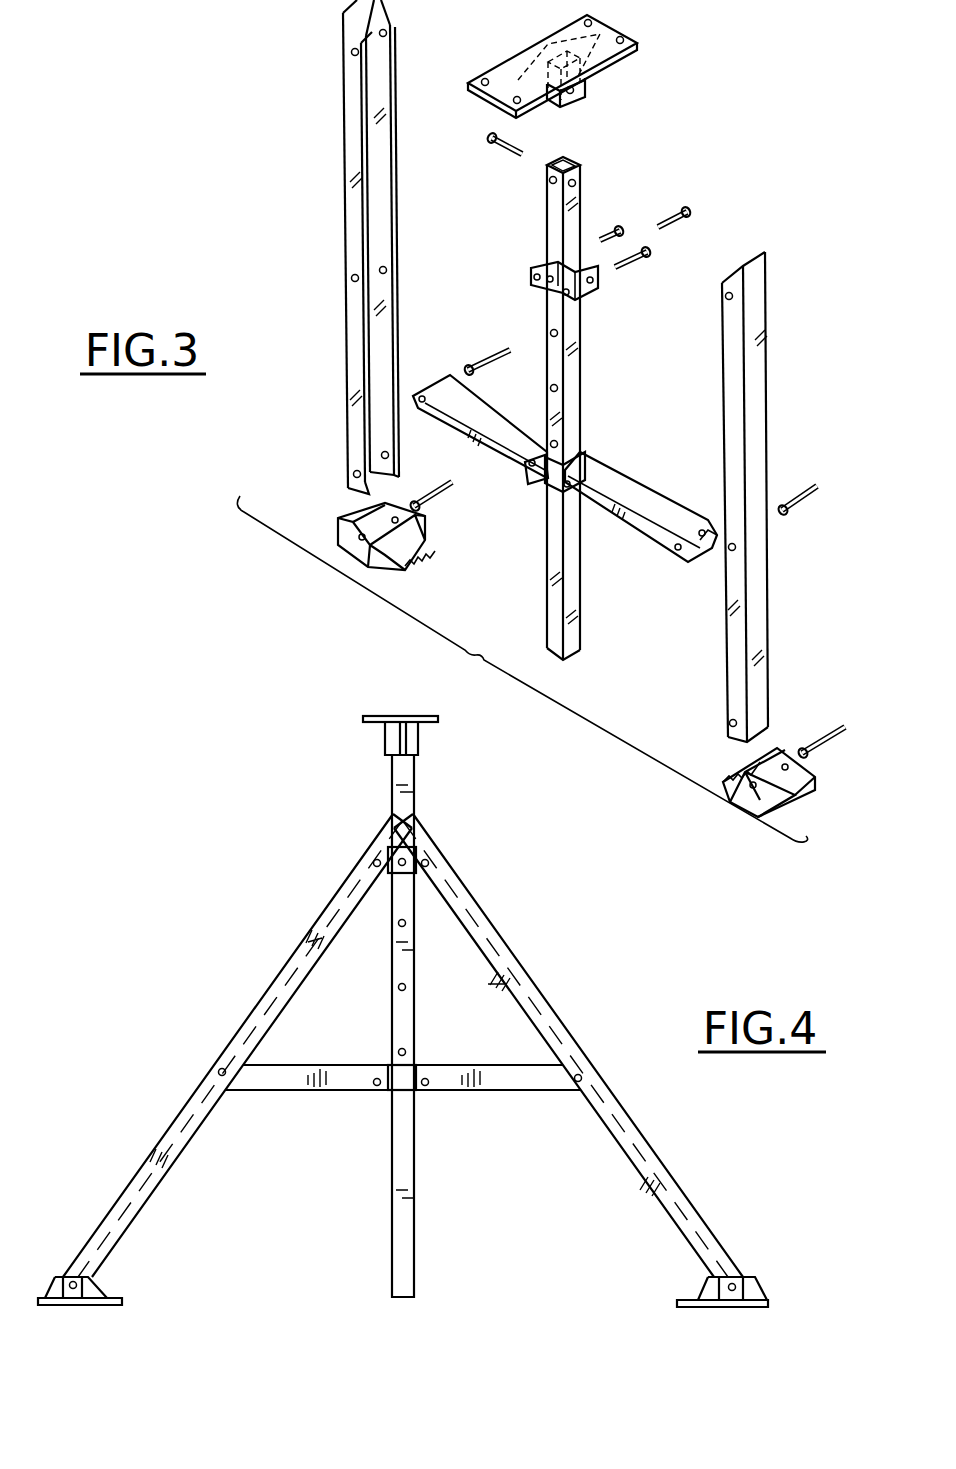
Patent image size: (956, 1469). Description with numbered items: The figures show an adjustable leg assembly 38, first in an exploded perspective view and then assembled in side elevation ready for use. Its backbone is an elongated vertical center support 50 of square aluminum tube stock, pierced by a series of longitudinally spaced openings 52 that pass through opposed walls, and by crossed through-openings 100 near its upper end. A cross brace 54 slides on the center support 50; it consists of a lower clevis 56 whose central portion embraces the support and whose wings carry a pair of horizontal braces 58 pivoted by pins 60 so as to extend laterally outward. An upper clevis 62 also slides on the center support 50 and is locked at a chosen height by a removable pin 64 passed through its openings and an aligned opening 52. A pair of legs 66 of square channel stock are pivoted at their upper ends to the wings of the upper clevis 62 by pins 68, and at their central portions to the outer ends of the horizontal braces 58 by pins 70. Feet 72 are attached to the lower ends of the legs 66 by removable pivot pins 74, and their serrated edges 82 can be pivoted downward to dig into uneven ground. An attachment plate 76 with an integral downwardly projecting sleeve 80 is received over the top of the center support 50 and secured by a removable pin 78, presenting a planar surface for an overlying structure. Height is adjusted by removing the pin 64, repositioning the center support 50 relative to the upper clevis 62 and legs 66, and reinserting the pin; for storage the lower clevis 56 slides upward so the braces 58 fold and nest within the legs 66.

In FIG. 3, the leg assembly 38 is at (843, 179).
In FIG. 4, the leg assembly 38 is at (634, 915).
In FIG. 3, the center support 50 is at (548, 566).
In FIG. 4, the center support 50 is at (412, 770).
In FIG. 3, the openings 52 is at (552, 386).
In FIG. 4, the openings 52 is at (398, 1052).
In FIG. 3, the cross brace 54 is at (632, 561).
In FIG. 4, the cross brace 54 is at (498, 1123).
In FIG. 3, the lower clevis 56 is at (565, 460).
In FIG. 4, the lower clevis 56 is at (404, 1074).
In FIG. 3, the horizontal braces 58 is at (495, 407).
In FIG. 4, the horizontal braces 58 is at (282, 1068).
In FIG. 3, the pins 60 is at (563, 487).
In FIG. 4, the pins 60 is at (422, 1088).
In FIG. 3, the upper clevis 62 is at (535, 270).
In FIG. 4, the upper clevis 62 is at (410, 852).
In FIG. 3, the removable pin 64 is at (680, 206).
In FIG. 4, the removable pin 64 is at (334, 884).
In FIG. 3, the legs 66 is at (345, 150).
In FIG. 4, the legs 66 is at (472, 910).
In FIG. 3, the pin 68 is at (640, 250).
In FIG. 4, the pin 68 is at (374, 863).
In FIG. 3, the pin 70 is at (478, 362).
In FIG. 4, the pin 70 is at (218, 1072).
In FIG. 3, the feet 72 is at (395, 570).
In FIG. 4, the feet 72 is at (760, 1285).
In FIG. 3, the removable pivot pins 74 is at (432, 496).
In FIG. 4, the removable pivot pins 74 is at (735, 1282).
In FIG. 3, the attachment plate 76 is at (600, 36).
In FIG. 4, the attachment plate 76 is at (366, 715).
In FIG. 3, the removable pin 78 is at (490, 148).
In FIG. 3, the sleeve 80 is at (592, 88).
In FIG. 4, the sleeve 80 is at (385, 738).
In FIG. 3, the serrated edges 82 is at (460, 550).
In FIG. 3, the through-openings 100 is at (556, 184).